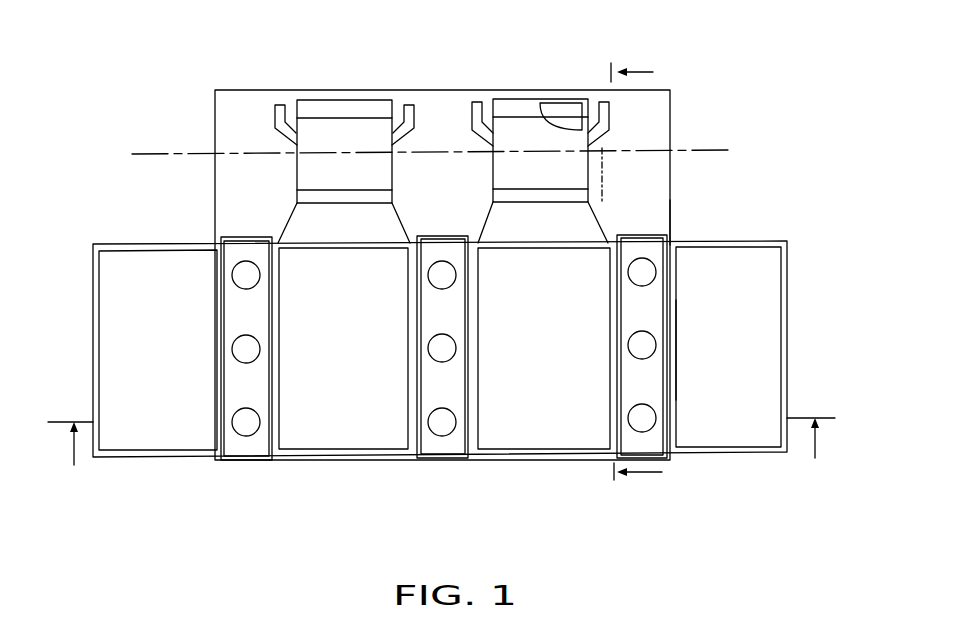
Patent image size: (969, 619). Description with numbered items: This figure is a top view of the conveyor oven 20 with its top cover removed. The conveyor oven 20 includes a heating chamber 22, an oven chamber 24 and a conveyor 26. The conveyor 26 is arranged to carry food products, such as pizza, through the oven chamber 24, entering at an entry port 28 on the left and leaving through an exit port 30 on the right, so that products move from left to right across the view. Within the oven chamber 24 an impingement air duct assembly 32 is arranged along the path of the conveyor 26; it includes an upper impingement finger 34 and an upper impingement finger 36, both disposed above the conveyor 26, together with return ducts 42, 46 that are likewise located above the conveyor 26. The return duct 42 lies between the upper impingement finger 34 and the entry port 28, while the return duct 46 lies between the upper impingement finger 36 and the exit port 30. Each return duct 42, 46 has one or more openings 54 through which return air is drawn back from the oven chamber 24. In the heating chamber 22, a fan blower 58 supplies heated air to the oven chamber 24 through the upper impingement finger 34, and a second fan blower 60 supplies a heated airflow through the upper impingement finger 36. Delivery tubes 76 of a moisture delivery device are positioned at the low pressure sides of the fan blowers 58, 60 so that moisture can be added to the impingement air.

The conveyor oven 20 is at (815, 108).
The heating chamber 22 is at (655, 122).
The oven chamber 24 is at (473, 437).
The conveyor 26 is at (760, 365).
The entry port 28 is at (158, 350).
The exit port 30 is at (692, 345).
The impingement air duct assembly 32 is at (652, 222).
The upper impingement finger 34 is at (332, 355).
The upper impingement finger 36 is at (526, 355).
The return duct 42 is at (233, 322).
The return duct 46 is at (627, 321).
The openings 54 is at (429, 280).
The fan blower 58 is at (344, 171).
The fan blower 60 is at (543, 171).
The delivery tubes 76 is at (280, 104).